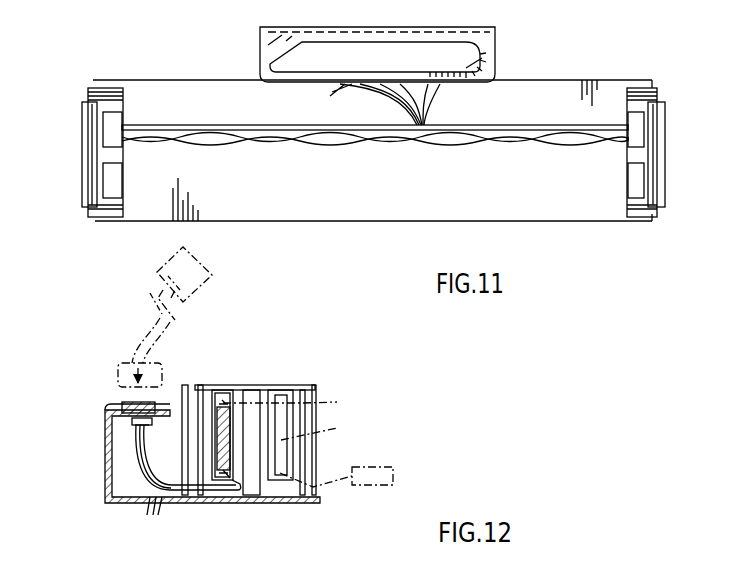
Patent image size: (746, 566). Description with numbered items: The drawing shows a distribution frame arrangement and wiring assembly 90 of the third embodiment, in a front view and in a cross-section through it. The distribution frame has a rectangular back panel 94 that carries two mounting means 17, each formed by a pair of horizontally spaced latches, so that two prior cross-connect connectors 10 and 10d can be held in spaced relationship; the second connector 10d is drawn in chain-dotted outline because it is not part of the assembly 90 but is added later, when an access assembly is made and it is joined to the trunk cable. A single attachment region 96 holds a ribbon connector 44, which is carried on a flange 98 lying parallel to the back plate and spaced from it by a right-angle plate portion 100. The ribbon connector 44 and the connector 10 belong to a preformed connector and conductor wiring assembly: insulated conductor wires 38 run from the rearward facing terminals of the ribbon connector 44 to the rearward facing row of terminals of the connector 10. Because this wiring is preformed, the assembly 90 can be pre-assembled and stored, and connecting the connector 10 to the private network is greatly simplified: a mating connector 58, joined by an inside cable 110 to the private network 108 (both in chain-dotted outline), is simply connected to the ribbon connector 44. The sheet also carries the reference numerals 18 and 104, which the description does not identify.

In FIG. 11, the cross-connect connector 10 is at (257, 125).
In FIG. 12, the cross-connect connector 10 is at (186, 430).
In FIG. 12, the second cross-connect connector 10d is at (296, 439).
In FIG. 11, the mounting means 17 is at (82, 124).
In FIG. 11, the support blocks 18 is at (122, 116).
In FIG. 12, the support blocks 18 is at (222, 390).
In FIG. 12, the insulated conductor wires 38 is at (154, 504).
In FIG. 11, the ribbon connector 44 is at (352, 67).
In FIG. 12, the ribbon connector 44 is at (158, 402).
In FIG. 12, the mating connector 58 is at (118, 366).
In FIG. 11, the distribution frame arrangement and wiring assembly 90 is at (623, 78).
In FIG. 12, the distribution frame arrangement and wiring assembly 90 is at (327, 495).
In FIG. 11, the rectangular back panel 94 is at (183, 88).
In FIG. 12, the rectangular back panel 94 is at (233, 503).
In FIG. 11, the attachment region 96 is at (487, 63).
In FIG. 12, the attachment region 96 is at (108, 408).
In FIG. 11, the flange 98 is at (497, 83).
In FIG. 12, the flange 98 is at (156, 413).
In FIG. 11, the right-angle plate portion 100 is at (260, 44).
In FIG. 12, the right-angle plate portion 100 is at (106, 470).
In FIG. 12, the control unit 104 is at (388, 464).
In FIG. 12, the private network 108 is at (205, 290).
In FIG. 12, the inside cable 110 is at (150, 314).